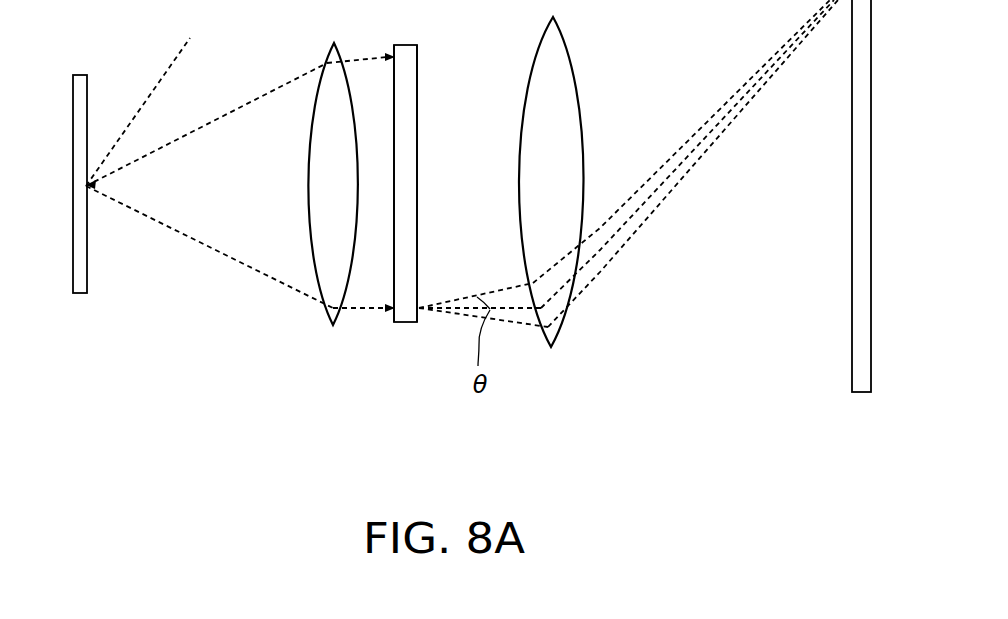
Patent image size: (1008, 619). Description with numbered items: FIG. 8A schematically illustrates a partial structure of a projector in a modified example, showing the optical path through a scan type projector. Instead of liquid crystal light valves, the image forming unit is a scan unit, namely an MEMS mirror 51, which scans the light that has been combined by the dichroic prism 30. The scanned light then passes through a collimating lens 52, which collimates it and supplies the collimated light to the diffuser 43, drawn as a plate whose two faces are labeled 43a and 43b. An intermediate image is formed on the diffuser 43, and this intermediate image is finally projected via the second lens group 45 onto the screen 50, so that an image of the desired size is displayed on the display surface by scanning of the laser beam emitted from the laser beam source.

The dichroic prism 30 is at (200, 95).
The MEMS mirror 51 is at (80, 293).
The collimating lens 52 is at (333, 325).
The diffuser 43 is at (407, 322).
The incident surface of plate 43 43a is at (393, 135).
The exit surface of plate 43 43b is at (417, 77).
The second lens group 45 is at (551, 347).
The screen 50 is at (863, 380).